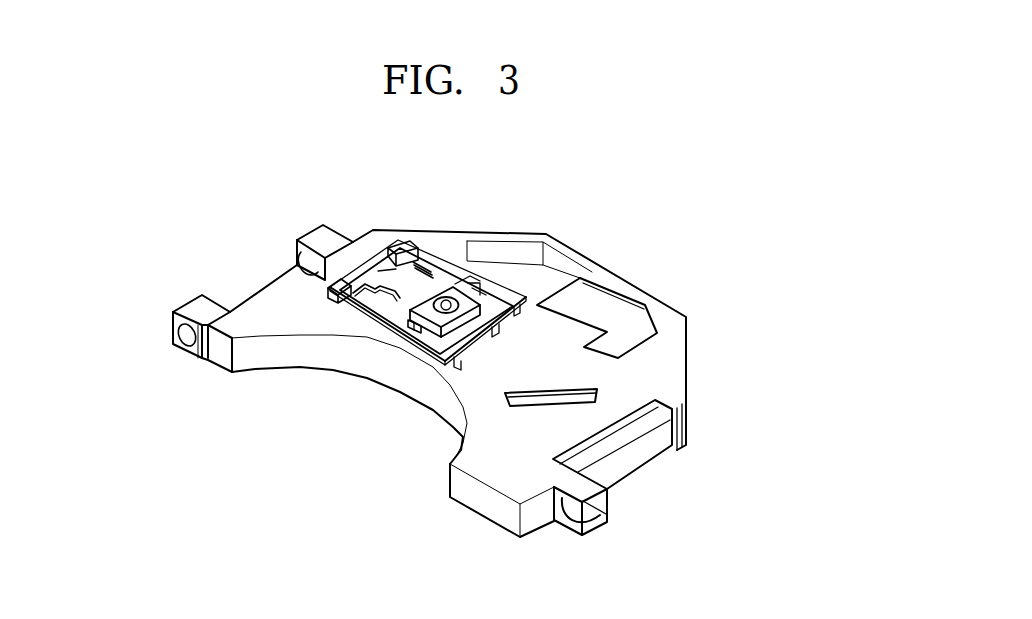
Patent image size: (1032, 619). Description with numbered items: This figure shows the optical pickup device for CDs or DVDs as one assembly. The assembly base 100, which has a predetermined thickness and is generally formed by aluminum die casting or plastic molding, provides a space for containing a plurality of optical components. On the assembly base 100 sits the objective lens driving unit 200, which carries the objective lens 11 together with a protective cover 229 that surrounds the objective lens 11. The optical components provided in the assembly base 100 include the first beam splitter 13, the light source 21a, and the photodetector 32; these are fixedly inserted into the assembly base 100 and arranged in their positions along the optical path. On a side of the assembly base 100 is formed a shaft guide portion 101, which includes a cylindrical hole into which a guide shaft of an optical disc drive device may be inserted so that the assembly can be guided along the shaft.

The assembly base 100 is at (268, 310).
The shaft guide portion 101 is at (193, 311).
The objective lens driving unit 200 is at (377, 274).
The objective lens 11 is at (446, 303).
The protective cover 229 is at (472, 276).
The light source 21a is at (615, 312).
The first beam splitter 13 is at (550, 397).
The photodetector 32 is at (634, 459).